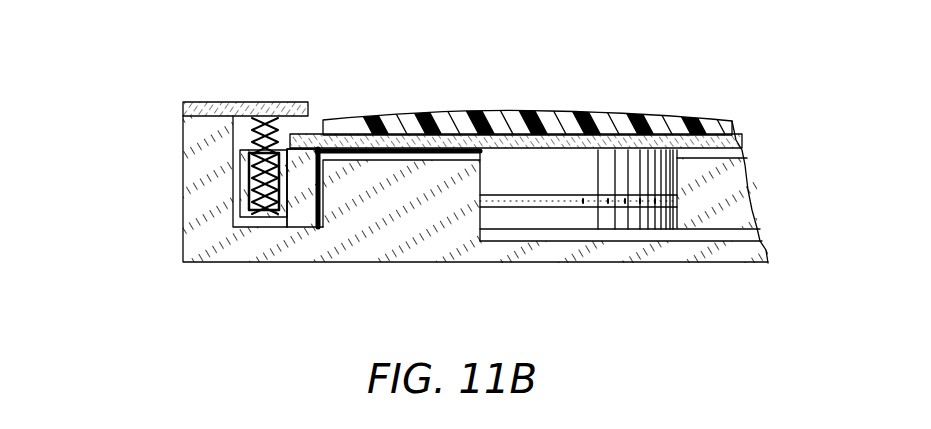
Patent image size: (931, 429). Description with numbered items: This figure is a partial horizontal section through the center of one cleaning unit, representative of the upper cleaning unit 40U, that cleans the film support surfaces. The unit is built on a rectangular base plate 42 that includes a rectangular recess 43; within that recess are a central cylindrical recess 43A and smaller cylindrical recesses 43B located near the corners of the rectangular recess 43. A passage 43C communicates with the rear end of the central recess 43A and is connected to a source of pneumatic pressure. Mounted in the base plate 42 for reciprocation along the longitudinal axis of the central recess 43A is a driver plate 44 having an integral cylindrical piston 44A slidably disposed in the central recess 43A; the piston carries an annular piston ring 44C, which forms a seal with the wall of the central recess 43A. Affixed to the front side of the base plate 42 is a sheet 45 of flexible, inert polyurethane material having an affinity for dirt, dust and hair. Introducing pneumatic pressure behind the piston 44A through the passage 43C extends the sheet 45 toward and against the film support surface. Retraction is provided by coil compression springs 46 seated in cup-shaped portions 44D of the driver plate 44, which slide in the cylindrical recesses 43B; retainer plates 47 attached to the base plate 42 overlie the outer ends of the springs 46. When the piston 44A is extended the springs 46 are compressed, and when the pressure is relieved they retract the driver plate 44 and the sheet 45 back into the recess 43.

The upper cleaning unit 40U is at (183, 102).
The base plate 42 is at (635, 258).
The rectangular recess 43 is at (240, 133).
The central cylindrical recess 43A is at (483, 180).
The cylindrical recess 43B is at (322, 227).
The passage 43C is at (722, 237).
The driver plate 44 is at (382, 130).
The cylindrical piston 44A is at (650, 165).
The annular piston ring 44C is at (575, 180).
The cup-shaped portion 44D is at (270, 220).
The sheet 45 is at (498, 112).
The coil compression spring 46 is at (252, 185).
The retainer plate 47 is at (240, 100).